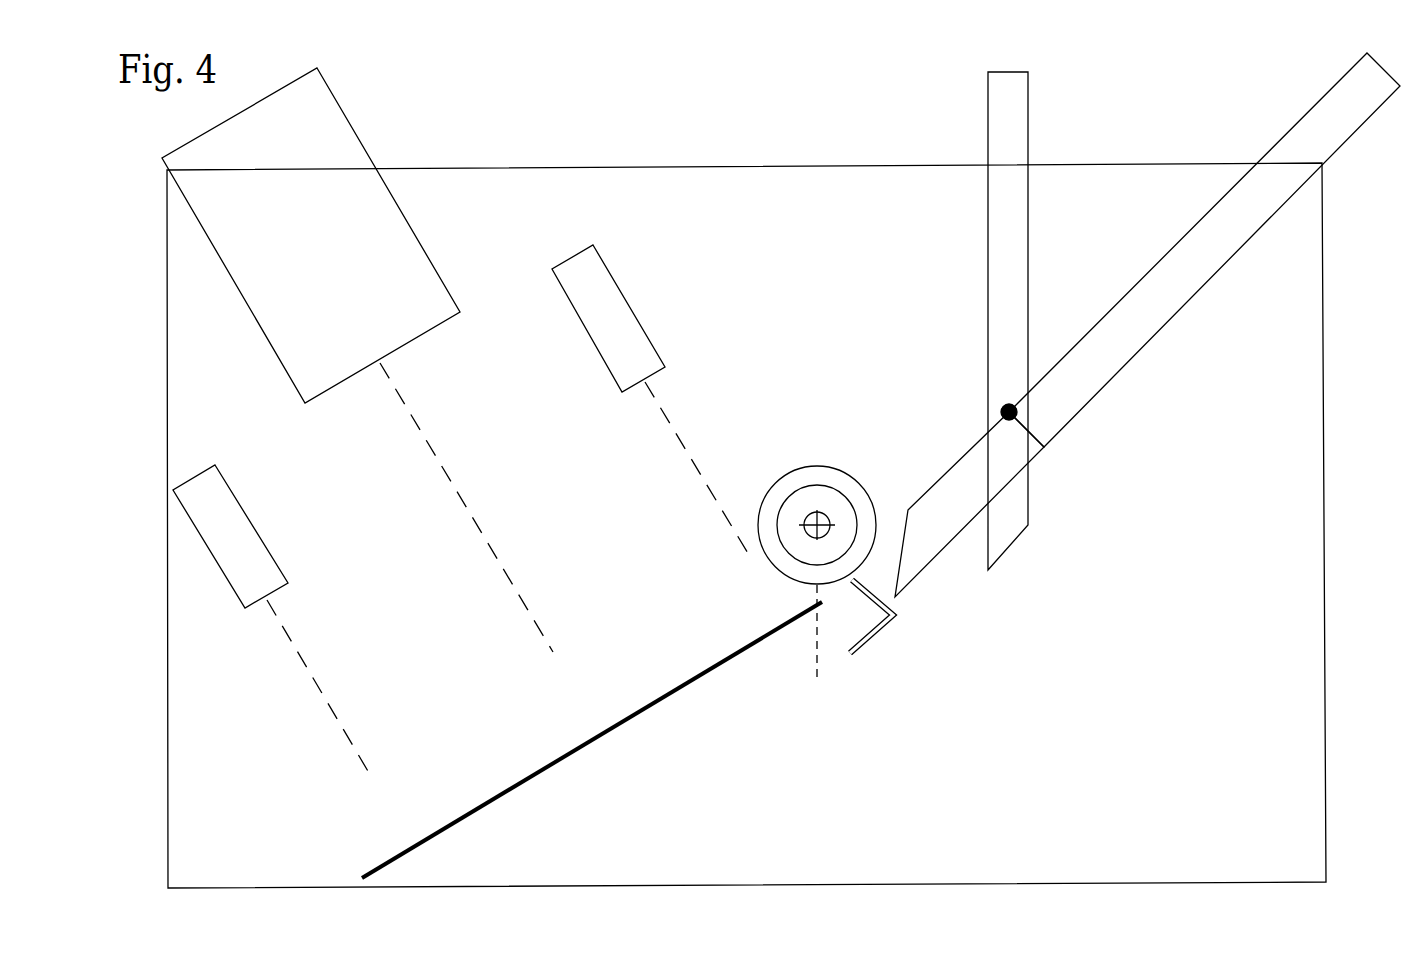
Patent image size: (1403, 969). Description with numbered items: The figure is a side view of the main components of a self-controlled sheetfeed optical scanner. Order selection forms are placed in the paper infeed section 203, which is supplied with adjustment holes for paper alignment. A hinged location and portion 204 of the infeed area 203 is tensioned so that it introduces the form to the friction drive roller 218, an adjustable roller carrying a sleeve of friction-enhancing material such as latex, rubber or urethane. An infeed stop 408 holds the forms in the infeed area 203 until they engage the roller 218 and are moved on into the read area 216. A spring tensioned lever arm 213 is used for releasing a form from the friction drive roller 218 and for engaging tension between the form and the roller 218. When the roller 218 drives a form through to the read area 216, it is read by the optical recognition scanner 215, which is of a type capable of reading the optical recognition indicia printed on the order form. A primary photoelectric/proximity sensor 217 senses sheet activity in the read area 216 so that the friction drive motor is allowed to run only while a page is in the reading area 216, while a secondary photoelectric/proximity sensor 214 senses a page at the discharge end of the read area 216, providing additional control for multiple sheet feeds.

The infeed section 203 is at (1200, 247).
The hinged location and portion 204 is at (910, 440).
The spring tensioned lever arm 213 is at (935, 321).
The secondary photoelectric/proximity sensor 214 is at (291, 621).
The optical recognition scanner 215 is at (357, 360).
The read area 216 is at (523, 782).
The primary photoelectric/proximity sensor 217 is at (652, 401).
The friction drive roller 218 is at (784, 512).
The infeed stop 408 is at (974, 642).